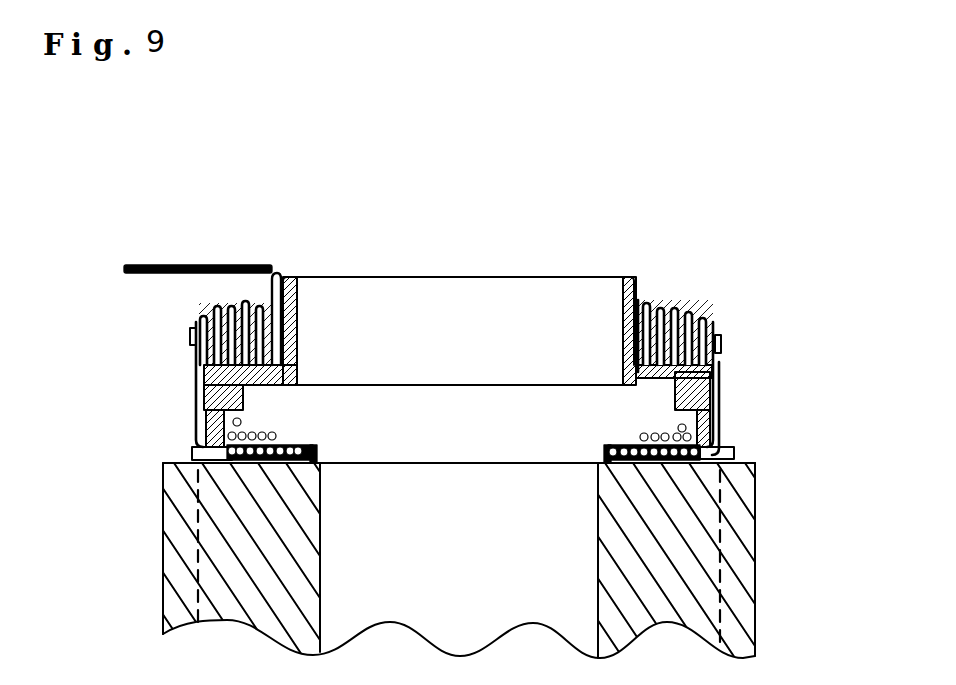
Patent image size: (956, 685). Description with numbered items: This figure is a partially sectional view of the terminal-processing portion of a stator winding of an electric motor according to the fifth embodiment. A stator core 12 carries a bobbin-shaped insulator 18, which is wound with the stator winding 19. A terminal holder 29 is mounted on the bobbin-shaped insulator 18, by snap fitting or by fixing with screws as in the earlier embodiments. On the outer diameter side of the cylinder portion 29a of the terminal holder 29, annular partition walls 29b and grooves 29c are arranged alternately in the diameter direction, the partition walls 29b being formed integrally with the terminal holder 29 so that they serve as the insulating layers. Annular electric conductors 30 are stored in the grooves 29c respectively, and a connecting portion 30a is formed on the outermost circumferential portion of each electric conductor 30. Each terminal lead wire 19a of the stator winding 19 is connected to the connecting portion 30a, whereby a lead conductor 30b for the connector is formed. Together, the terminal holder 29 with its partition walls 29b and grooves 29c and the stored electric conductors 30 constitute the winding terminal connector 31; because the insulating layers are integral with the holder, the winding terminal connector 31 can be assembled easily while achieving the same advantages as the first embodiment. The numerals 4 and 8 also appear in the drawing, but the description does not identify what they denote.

The lead terminal 4 is at (640, 371).
The insulating block 8 is at (673, 398).
The stator core 12 is at (703, 563).
The bobbin-shaped insulator 18 is at (717, 447).
The stator winding 19 is at (665, 490).
The terminal lead wire 19a is at (723, 370).
The terminal holder 29 is at (297, 370).
The cylinder portion 29a is at (293, 279).
The annular partition wall 29b is at (253, 307).
The groove 29c is at (260, 300).
The annular electric conductor 30 is at (702, 310).
The connecting portion 30a is at (727, 337).
The lead conductor 30b is at (143, 275).
The winding terminal connector 31 is at (582, 276).